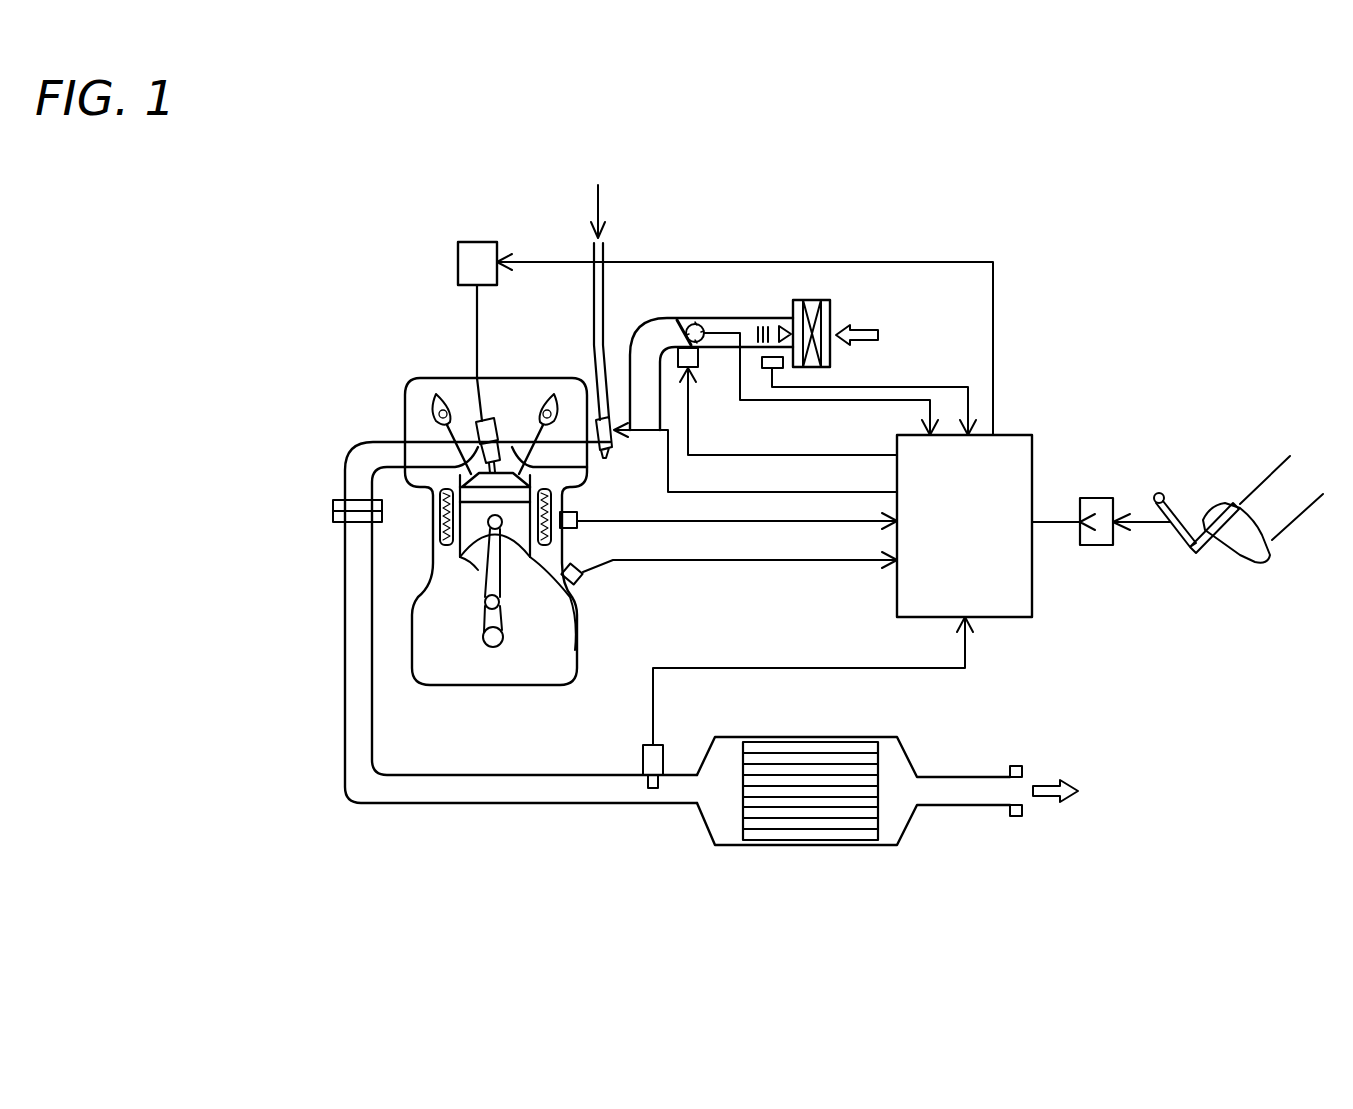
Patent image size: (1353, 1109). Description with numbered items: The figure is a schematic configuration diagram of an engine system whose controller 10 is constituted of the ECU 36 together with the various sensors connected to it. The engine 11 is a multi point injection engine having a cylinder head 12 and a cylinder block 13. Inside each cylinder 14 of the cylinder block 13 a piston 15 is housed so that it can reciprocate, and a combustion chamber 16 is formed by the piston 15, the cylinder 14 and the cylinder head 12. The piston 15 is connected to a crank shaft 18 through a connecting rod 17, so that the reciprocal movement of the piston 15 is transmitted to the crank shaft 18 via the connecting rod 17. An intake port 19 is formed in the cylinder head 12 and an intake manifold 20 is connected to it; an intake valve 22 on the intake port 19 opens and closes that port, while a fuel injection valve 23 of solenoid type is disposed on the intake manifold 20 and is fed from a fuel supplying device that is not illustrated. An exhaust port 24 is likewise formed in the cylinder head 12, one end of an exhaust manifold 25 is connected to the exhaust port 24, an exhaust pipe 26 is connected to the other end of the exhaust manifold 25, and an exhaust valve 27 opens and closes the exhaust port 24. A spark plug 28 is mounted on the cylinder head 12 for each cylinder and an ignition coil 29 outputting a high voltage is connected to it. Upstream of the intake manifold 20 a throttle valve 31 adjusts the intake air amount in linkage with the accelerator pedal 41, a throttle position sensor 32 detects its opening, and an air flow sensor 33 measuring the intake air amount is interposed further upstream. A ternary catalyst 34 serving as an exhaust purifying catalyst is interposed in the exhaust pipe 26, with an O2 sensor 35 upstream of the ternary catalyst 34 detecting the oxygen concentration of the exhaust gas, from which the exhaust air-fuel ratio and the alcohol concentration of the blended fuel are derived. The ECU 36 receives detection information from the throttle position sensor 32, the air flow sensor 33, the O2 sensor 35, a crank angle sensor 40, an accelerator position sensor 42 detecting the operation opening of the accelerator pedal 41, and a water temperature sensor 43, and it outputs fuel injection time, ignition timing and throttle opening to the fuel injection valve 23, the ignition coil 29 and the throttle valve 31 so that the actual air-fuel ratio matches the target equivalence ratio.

The controller 10 is at (1133, 345).
The engine 11 is at (365, 320).
The cylinder head 12 is at (460, 418).
The cylinder block 13 is at (445, 560).
The cylinder 14 is at (567, 593).
The piston 15 is at (520, 525).
The combustion chamber 16 is at (483, 490).
The connecting rod 17 is at (490, 547).
The crank shaft 18 is at (503, 647).
The intake port 19 is at (515, 418).
The intake manifold 20 is at (570, 455).
The intake valve 22 is at (528, 412).
The fuel injection valve 23 is at (616, 448).
The exhaust port 24 is at (478, 421).
The exhaust manifold 25 is at (445, 450).
The exhaust pipe 26 is at (352, 487).
The exhaust valve 27 is at (447, 460).
The spark plug 28 is at (500, 418).
The ignition coil 29 is at (473, 255).
The throttle valve 31 is at (683, 330).
The throttle position sensor 32 is at (705, 325).
The air flow sensor 33 is at (773, 357).
The ternary catalyst 34 is at (820, 860).
The O2 sensor 35 is at (647, 762).
The ECU 36 is at (1020, 478).
The crank angle sensor 40 is at (569, 584).
The accelerator pedal 41 is at (1193, 549).
The accelerator position sensor 42 is at (1098, 503).
The water temperature sensor 43 is at (574, 512).